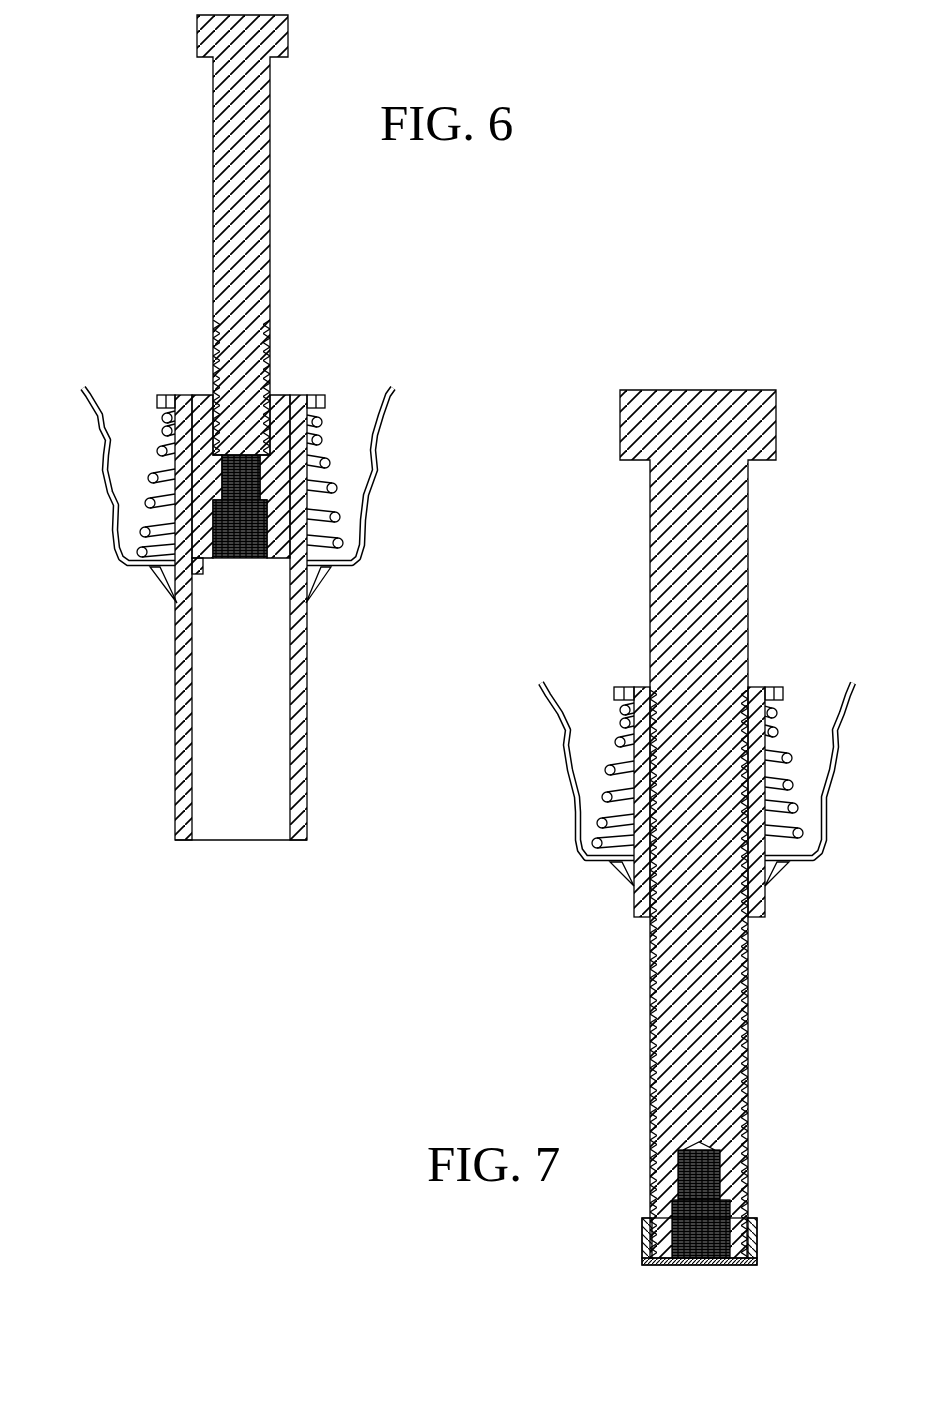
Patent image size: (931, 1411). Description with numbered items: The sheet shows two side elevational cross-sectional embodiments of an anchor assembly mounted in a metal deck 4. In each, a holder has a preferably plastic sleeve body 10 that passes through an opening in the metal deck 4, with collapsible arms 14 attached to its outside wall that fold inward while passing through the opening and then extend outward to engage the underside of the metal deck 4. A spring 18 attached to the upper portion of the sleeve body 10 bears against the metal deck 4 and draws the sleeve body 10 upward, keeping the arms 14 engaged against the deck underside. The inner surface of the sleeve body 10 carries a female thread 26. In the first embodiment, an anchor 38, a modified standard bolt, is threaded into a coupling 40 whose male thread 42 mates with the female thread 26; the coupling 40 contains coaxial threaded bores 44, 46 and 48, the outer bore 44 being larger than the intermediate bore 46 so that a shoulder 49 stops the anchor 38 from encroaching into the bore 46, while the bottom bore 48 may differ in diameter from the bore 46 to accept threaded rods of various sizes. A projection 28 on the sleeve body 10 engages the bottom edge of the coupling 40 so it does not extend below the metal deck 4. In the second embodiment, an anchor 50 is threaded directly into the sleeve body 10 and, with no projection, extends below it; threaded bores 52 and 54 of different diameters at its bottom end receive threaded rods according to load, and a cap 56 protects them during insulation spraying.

In FIG. 6, the metal deck 4 is at (378, 492).
In FIG. 7, the metal deck 4 is at (834, 766).
In FIG. 6, the sleeve body 10 is at (314, 733).
In FIG. 7, the sleeve body 10 is at (625, 783).
In FIG. 6, the collapsible arms 14 is at (160, 608).
In FIG. 7, the collapsible arms 14 is at (620, 861).
In FIG. 6, the spring 18 is at (337, 487).
In FIG. 7, the spring 18 is at (795, 753).
In FIG. 6, the female thread 26 is at (333, 532).
In FIG. 7, the female thread 26 is at (803, 824).
In FIG. 6, the projection 28 is at (165, 563).
In FIG. 6, the anchor 38 is at (213, 195).
In FIG. 6, the coupling 40 is at (281, 390).
In FIG. 6, the male thread 42 is at (330, 448).
In FIG. 6, the threaded bore 44 is at (162, 425).
In FIG. 6, the intermediate threaded bore 46 is at (160, 467).
In FIG. 6, the bottom threaded bore 48 is at (157, 522).
In FIG. 6, the shoulder 49 is at (291, 398).
In FIG. 7, the anchor 50 is at (640, 552).
In FIG. 7, the inner threaded bore 52 is at (720, 1163).
In FIG. 7, the outer threaded bore 54 is at (757, 1222).
In FIG. 7, the cap 56 is at (757, 1258).